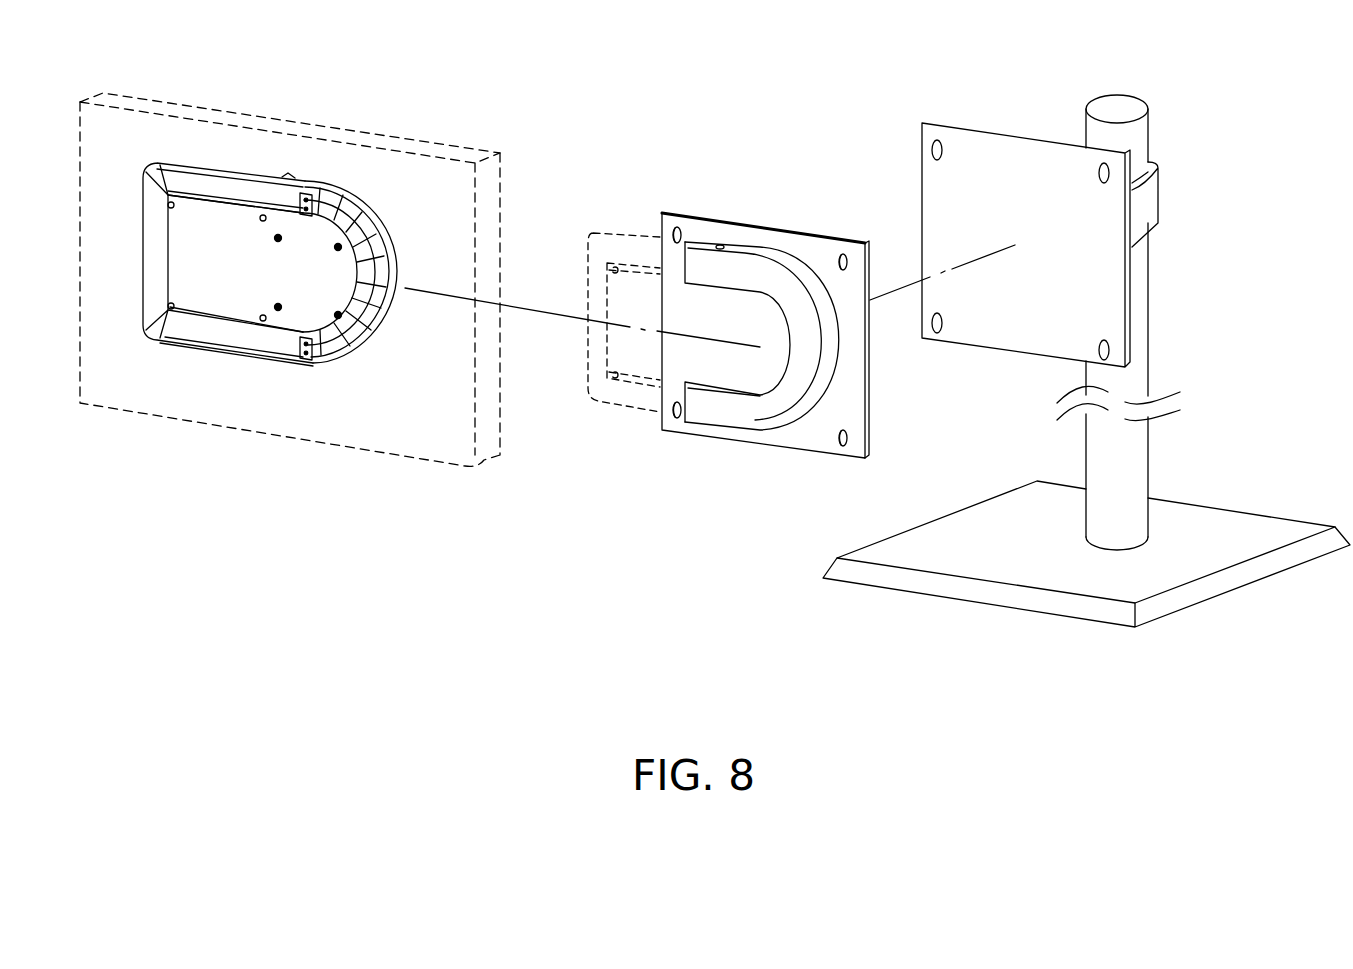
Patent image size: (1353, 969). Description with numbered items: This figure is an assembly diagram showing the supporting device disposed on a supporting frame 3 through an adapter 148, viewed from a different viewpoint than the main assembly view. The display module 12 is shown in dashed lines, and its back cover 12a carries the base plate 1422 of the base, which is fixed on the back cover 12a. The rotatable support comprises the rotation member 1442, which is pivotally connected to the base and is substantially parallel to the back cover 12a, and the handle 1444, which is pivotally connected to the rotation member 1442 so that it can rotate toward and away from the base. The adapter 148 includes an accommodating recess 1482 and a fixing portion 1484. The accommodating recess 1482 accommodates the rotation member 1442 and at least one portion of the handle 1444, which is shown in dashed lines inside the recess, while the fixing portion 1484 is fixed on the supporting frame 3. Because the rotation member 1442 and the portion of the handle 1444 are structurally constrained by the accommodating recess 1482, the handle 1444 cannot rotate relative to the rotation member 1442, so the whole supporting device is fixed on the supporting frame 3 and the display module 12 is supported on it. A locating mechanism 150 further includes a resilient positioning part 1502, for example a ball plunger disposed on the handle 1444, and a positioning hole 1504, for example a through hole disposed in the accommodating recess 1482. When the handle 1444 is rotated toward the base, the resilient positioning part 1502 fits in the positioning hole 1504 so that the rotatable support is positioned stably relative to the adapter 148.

The supporting frame 3 is at (1185, 343).
The display module 12 is at (290, 266).
The back cover 12a is at (230, 112).
The adapter 148 is at (858, 173).
The locating mechanism 150 is at (630, 103).
The base plate 1422 is at (205, 308).
The rotation member 1442 is at (385, 305).
The handle 1444 is at (252, 348).
The accommodating recess 1482 is at (740, 278).
The fixing portion 1484 is at (808, 243).
The resilient positioning part 1502 is at (282, 177).
The positioning hole 1504 is at (720, 245).